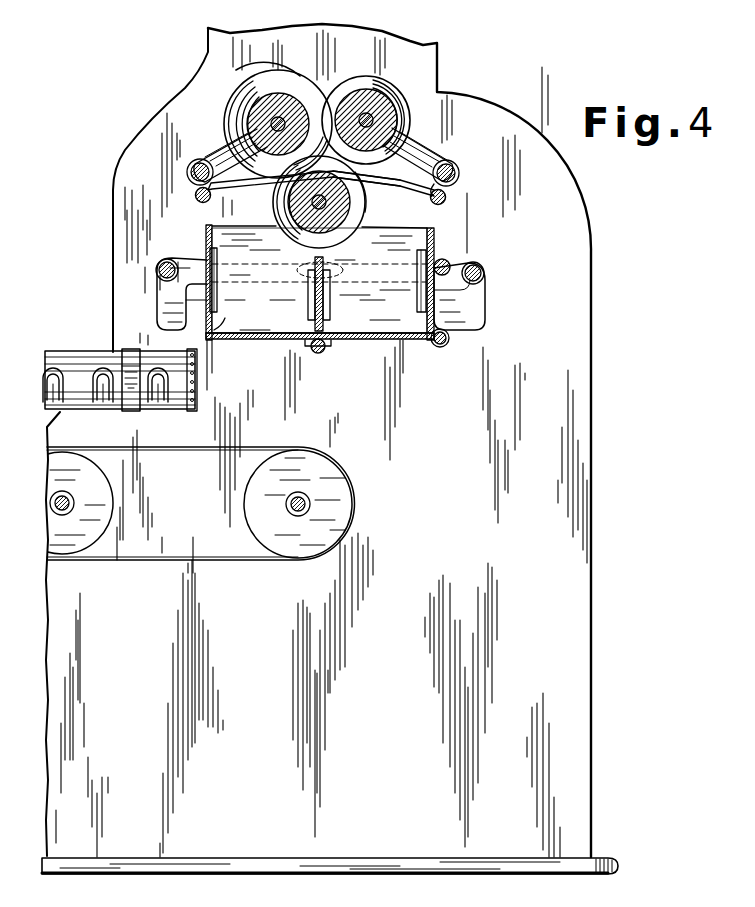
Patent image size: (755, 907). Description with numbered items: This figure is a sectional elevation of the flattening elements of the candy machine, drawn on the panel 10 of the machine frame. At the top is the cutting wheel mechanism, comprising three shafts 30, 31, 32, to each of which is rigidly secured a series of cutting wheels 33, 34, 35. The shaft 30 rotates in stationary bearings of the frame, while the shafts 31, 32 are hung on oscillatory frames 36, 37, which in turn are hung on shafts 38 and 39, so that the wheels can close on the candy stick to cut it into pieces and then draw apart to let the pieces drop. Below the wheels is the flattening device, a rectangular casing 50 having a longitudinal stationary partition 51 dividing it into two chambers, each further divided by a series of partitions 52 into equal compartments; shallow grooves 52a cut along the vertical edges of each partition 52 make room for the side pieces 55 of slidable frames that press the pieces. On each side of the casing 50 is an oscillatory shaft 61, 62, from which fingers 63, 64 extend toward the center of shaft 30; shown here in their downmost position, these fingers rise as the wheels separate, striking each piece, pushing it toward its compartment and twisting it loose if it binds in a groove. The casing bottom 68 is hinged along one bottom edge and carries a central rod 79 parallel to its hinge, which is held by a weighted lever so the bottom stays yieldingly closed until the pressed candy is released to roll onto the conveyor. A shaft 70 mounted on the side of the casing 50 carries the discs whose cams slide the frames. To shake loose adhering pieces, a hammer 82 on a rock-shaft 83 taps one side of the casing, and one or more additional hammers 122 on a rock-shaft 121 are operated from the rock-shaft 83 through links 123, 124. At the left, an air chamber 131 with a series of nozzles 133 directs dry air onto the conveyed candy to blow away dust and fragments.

The panel 10 is at (584, 290).
The shaft 30 is at (313, 202).
The shaft 31 is at (275, 123).
The shaft 32 is at (372, 118).
The cutting wheels 33 is at (365, 216).
The cutting wheels 34 is at (245, 82).
The cutting wheels 35 is at (415, 153).
The oscillatory frame 36 is at (220, 148).
The oscillatory frame 37 is at (449, 166).
The shaft 38 is at (193, 164).
The shaft 39 is at (446, 197).
The casing 50 is at (206, 228).
The stationary partition 51 is at (338, 327).
The partitions 52 is at (319, 280).
The shallow grooves 52a is at (311, 289).
The side pieces 55 is at (218, 270).
The oscillatory shaft 61 is at (197, 192).
The oscillatory shaft 62 is at (446, 195).
The fingers 63 is at (229, 184).
The fingers 64 is at (380, 186).
The casing bottom 68 is at (271, 341).
The shaft 70 is at (450, 262).
The rod 79 is at (326, 348).
The hammer 82 is at (167, 311).
The rock-shaft 83 is at (158, 272).
The rock-shaft 121 is at (484, 266).
The additional hammers 122 is at (473, 304).
The link 123 is at (480, 322).
The link 124 is at (199, 263).
The air chamber 131 is at (176, 410).
The nozzles 133 is at (112, 410).